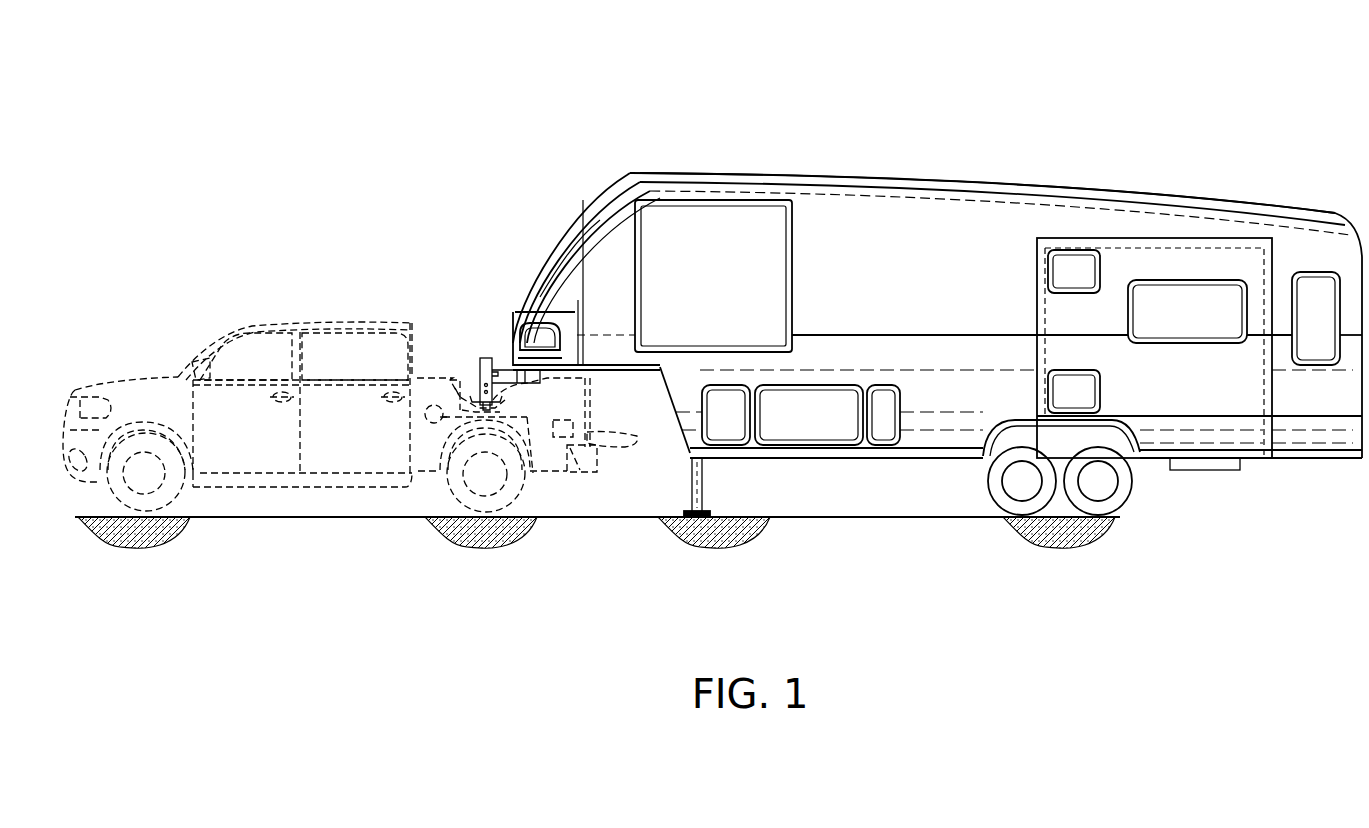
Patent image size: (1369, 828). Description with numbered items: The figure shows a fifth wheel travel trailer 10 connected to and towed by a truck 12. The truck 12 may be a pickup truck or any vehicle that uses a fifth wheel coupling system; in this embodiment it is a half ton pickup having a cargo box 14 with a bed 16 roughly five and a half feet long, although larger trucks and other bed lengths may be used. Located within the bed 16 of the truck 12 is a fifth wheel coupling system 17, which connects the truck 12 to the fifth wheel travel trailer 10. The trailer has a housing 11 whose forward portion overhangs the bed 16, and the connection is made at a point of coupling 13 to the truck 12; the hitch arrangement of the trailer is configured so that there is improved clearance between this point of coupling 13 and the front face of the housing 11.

The fifth wheel travel trailer 10 is at (945, 153).
The housing 11 is at (785, 172).
The truck 12 is at (218, 325).
The point of coupling 13 is at (487, 358).
The cargo box 14 is at (423, 387).
The bed 16 is at (570, 463).
The fifth wheel coupling system 17 is at (455, 380).